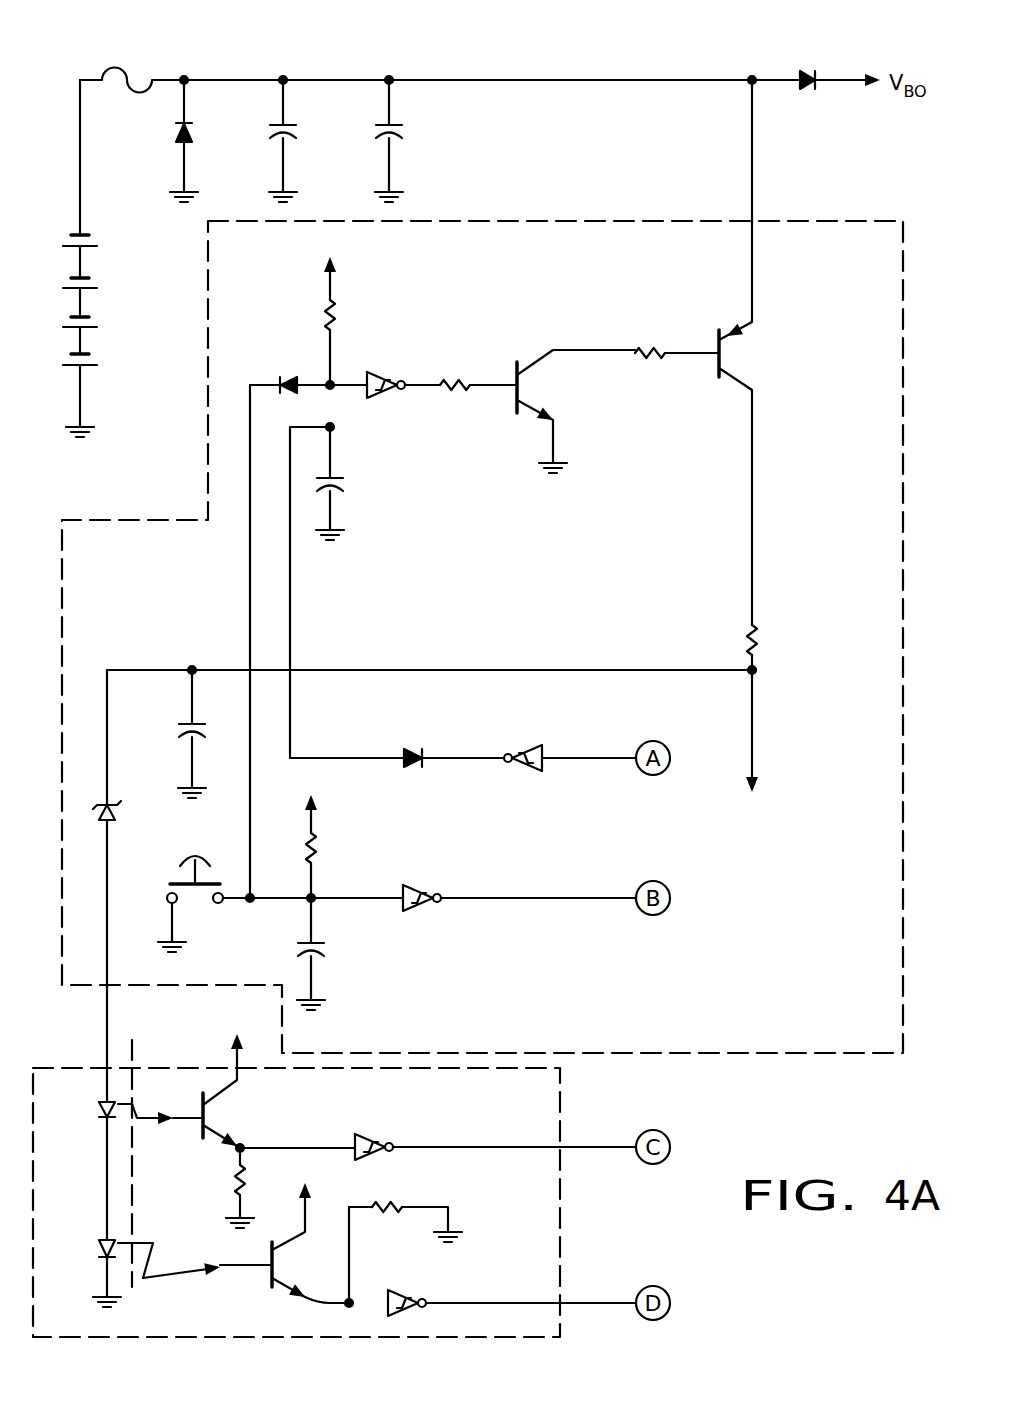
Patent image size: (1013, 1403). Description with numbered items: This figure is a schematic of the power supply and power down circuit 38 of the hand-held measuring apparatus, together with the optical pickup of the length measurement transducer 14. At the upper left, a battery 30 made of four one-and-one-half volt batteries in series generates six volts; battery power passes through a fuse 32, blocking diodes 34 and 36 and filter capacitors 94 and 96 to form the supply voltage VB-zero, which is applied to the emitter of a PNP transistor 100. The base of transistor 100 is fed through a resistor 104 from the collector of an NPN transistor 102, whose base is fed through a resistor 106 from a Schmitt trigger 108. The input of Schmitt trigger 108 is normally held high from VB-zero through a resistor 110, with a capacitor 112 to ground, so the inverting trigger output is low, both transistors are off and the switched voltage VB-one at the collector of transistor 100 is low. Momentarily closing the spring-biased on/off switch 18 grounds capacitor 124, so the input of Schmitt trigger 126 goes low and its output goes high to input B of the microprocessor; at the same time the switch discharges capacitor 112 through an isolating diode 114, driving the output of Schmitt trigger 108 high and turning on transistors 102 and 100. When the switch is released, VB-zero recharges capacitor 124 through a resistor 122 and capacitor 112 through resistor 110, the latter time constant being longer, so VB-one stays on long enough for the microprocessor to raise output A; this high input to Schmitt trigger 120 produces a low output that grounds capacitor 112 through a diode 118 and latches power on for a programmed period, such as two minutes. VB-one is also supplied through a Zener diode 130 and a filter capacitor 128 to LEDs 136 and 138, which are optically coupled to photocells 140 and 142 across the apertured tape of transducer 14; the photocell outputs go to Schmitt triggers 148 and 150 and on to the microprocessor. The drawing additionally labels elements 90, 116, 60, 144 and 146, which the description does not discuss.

The fuse 32 is at (126, 70).
The blocking diode 34 is at (194, 128).
The filter capacitor 94 is at (295, 130).
The filter capacitor 96 is at (401, 130).
The blocking diode 36 is at (806, 90).
The power down circuit 38 is at (585, 220).
The battery cell 90 is at (95, 246).
The battery 30 is at (120, 258).
The isolating diode 114 is at (286, 374).
The resistor 110 is at (337, 320).
The Schmitt trigger 108 is at (385, 372).
The resistor 106 is at (458, 378).
The resistor 104 is at (652, 348).
The NPN transistor 102 is at (513, 405).
The PNP transistor 100 is at (715, 372).
The capacitor 112 is at (345, 480).
The resistor 116 is at (760, 642).
The filter capacitor 128 is at (178, 725).
The diode 118 is at (410, 750).
The Schmitt trigger 120 is at (520, 750).
The Zener diode 130 is at (118, 814).
The resistor 122 is at (314, 858).
The Schmitt trigger 126 is at (418, 886).
The on/off switch 18 is at (197, 886).
The capacitor 124 is at (325, 944).
The length measurement transducer 14 is at (134, 1050).
The LED 136 is at (85, 1117).
The photocell 140 is at (210, 1115).
The Schmitt trigger 148 is at (368, 1135).
The optical coupler circuit 60 is at (560, 1122).
The resistor 144 is at (235, 1180).
The resistor 146 is at (390, 1200).
The LED 138 is at (85, 1250).
The photocell 142 is at (268, 1282).
The Schmitt trigger 150 is at (400, 1290).